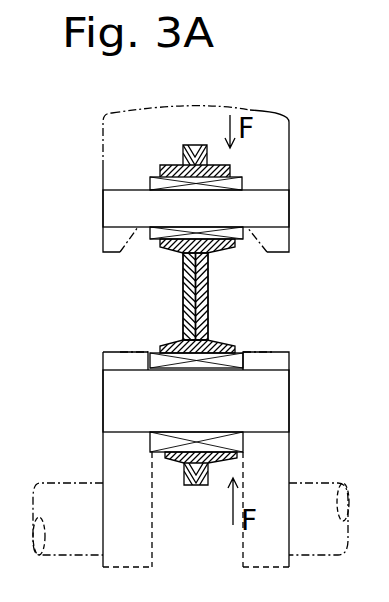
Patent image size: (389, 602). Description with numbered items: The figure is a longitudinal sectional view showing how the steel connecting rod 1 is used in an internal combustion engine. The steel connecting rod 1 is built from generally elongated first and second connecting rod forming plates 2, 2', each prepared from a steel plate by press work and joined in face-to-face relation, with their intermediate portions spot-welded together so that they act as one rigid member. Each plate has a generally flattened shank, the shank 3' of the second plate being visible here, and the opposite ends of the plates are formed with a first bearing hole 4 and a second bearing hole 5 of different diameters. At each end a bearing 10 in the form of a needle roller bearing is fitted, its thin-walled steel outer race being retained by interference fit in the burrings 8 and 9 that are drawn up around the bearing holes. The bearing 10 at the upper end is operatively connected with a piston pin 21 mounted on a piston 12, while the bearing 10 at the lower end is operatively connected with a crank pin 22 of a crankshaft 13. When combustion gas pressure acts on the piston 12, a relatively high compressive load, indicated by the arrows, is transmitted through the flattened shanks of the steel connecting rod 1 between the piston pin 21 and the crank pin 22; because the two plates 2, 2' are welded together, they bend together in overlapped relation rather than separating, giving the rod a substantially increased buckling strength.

The steel connecting rod 1 is at (73, 263).
The first connecting rod forming plate 2 is at (136, 296).
The second connecting rod forming plate 2' is at (142, 296).
The flattened shank 3' is at (218, 318).
The first bearing hole 4 is at (222, 238).
The second bearing hole 5 is at (237, 373).
The burring 8 is at (163, 167).
The burring 9 is at (172, 462).
The bearing 10 is at (237, 188).
The piston 12 is at (266, 110).
The crankshaft 13 is at (323, 480).
The piston pin 21 is at (128, 198).
The crank pin 22 is at (130, 425).